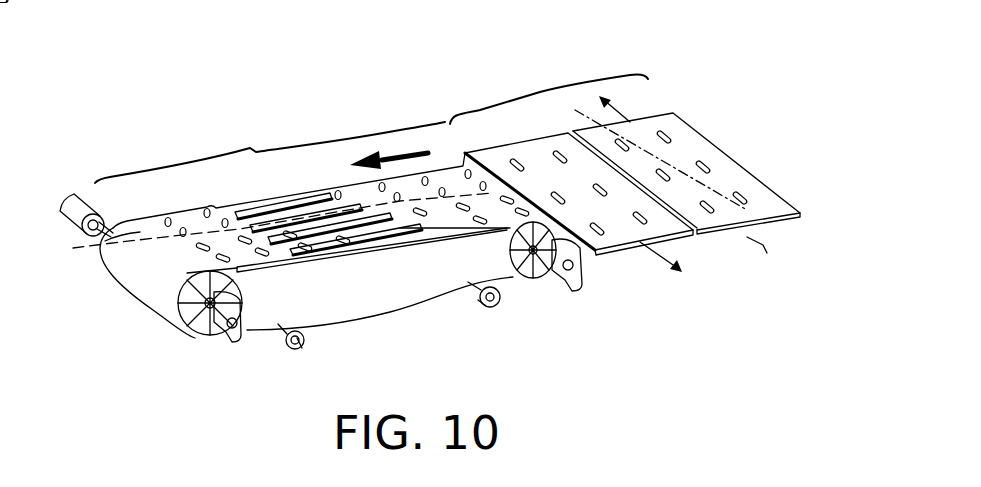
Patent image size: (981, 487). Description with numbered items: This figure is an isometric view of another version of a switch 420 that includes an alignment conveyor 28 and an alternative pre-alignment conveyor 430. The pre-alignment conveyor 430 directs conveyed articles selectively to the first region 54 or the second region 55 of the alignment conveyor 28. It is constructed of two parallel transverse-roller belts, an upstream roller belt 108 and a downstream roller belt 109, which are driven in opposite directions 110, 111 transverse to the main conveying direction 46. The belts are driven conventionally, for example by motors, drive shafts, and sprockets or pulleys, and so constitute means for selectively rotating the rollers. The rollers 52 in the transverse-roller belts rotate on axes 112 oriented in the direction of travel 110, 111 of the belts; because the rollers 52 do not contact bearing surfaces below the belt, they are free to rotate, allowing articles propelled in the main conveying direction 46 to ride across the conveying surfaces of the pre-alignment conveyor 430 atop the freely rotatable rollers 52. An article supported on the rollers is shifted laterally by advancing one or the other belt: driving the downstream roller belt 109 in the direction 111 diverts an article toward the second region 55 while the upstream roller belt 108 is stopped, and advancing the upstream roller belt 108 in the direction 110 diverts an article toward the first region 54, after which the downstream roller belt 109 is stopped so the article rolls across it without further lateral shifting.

The switch 420 is at (308, 58).
The alignment conveyor 28 is at (250, 147).
The pre-alignment conveyor 430 is at (542, 92).
The main conveying direction 46 is at (407, 153).
The rollers 52 is at (703, 166).
The first region 54 is at (108, 244).
The second region 55 is at (188, 265).
The upstream roller belt 108 is at (777, 193).
The downstream roller belt 109 is at (602, 250).
The direction of travel of upstream roller belt 110 is at (622, 103).
The direction of travel of downstream roller belt 111 is at (660, 252).
The roller axes 112 is at (763, 245).